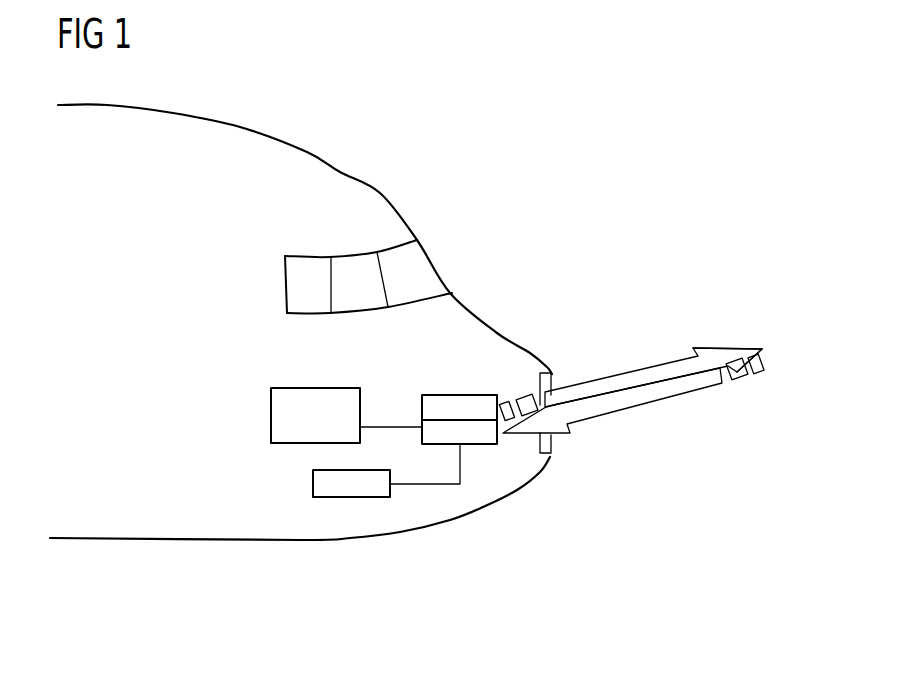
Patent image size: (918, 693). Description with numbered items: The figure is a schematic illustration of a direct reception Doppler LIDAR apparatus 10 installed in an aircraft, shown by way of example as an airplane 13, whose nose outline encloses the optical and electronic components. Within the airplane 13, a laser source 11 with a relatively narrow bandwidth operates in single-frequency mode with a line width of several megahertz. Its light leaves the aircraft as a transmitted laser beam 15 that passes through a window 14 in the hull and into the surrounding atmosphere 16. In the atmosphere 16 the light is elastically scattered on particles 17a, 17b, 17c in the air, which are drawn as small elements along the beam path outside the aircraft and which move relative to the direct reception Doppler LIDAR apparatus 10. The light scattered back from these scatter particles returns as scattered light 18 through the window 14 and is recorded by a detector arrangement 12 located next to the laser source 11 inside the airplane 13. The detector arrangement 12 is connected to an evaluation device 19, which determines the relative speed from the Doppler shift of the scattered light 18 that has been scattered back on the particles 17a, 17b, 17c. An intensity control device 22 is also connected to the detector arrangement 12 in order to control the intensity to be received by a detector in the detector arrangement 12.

The direct reception Doppler LIDAR apparatus 10 is at (423, 546).
The laser source 11 is at (459, 398).
The detector arrangement 12 is at (475, 445).
The airplane 13 is at (382, 193).
The window 14 is at (552, 447).
The transmitted laser beam 15 is at (616, 380).
The atmosphere 16 is at (595, 224).
The particle 17a is at (751, 337).
The particle 17b is at (765, 348).
The particle 17c is at (767, 362).
The scattered light 18 is at (648, 398).
The evaluation device 19 is at (271, 418).
The intensity control device 22 is at (313, 483).